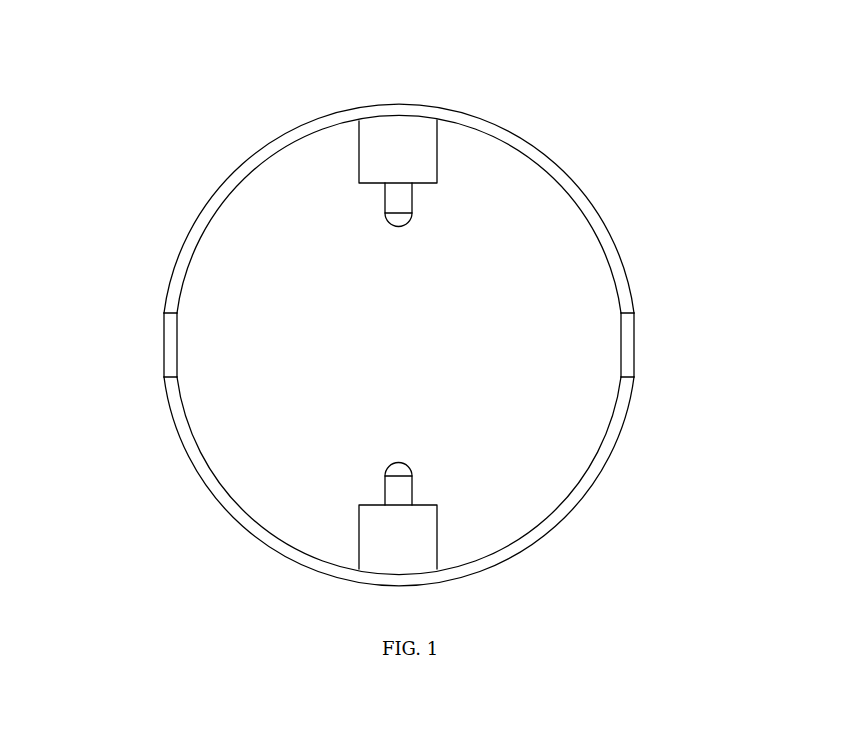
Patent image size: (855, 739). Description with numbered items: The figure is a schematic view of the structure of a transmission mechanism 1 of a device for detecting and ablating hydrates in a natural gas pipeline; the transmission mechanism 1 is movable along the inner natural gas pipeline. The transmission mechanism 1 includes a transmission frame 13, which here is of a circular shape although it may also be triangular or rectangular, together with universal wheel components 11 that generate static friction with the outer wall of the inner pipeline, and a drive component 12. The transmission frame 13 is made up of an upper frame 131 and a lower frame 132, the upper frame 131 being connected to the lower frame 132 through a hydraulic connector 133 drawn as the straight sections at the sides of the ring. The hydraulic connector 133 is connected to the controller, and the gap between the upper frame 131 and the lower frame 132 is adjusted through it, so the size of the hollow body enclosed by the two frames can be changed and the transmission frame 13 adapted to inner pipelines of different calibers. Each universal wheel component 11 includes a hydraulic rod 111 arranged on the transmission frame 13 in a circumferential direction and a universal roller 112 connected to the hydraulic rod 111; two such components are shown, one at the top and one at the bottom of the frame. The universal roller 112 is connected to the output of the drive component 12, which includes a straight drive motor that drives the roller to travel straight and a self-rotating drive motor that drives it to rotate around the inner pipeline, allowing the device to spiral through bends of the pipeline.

The transmission mechanism 1 is at (381, 105).
The universal wheel component 11 is at (412, 197).
The hydraulic rod 111 is at (385, 197).
The universal roller 112 is at (384, 226).
The drive component 12 is at (359, 153).
The transmission frame 13 is at (518, 145).
The upper frame 131 is at (617, 262).
The lower frame 132 is at (617, 412).
The hydraulic connector 133 is at (755, 328).